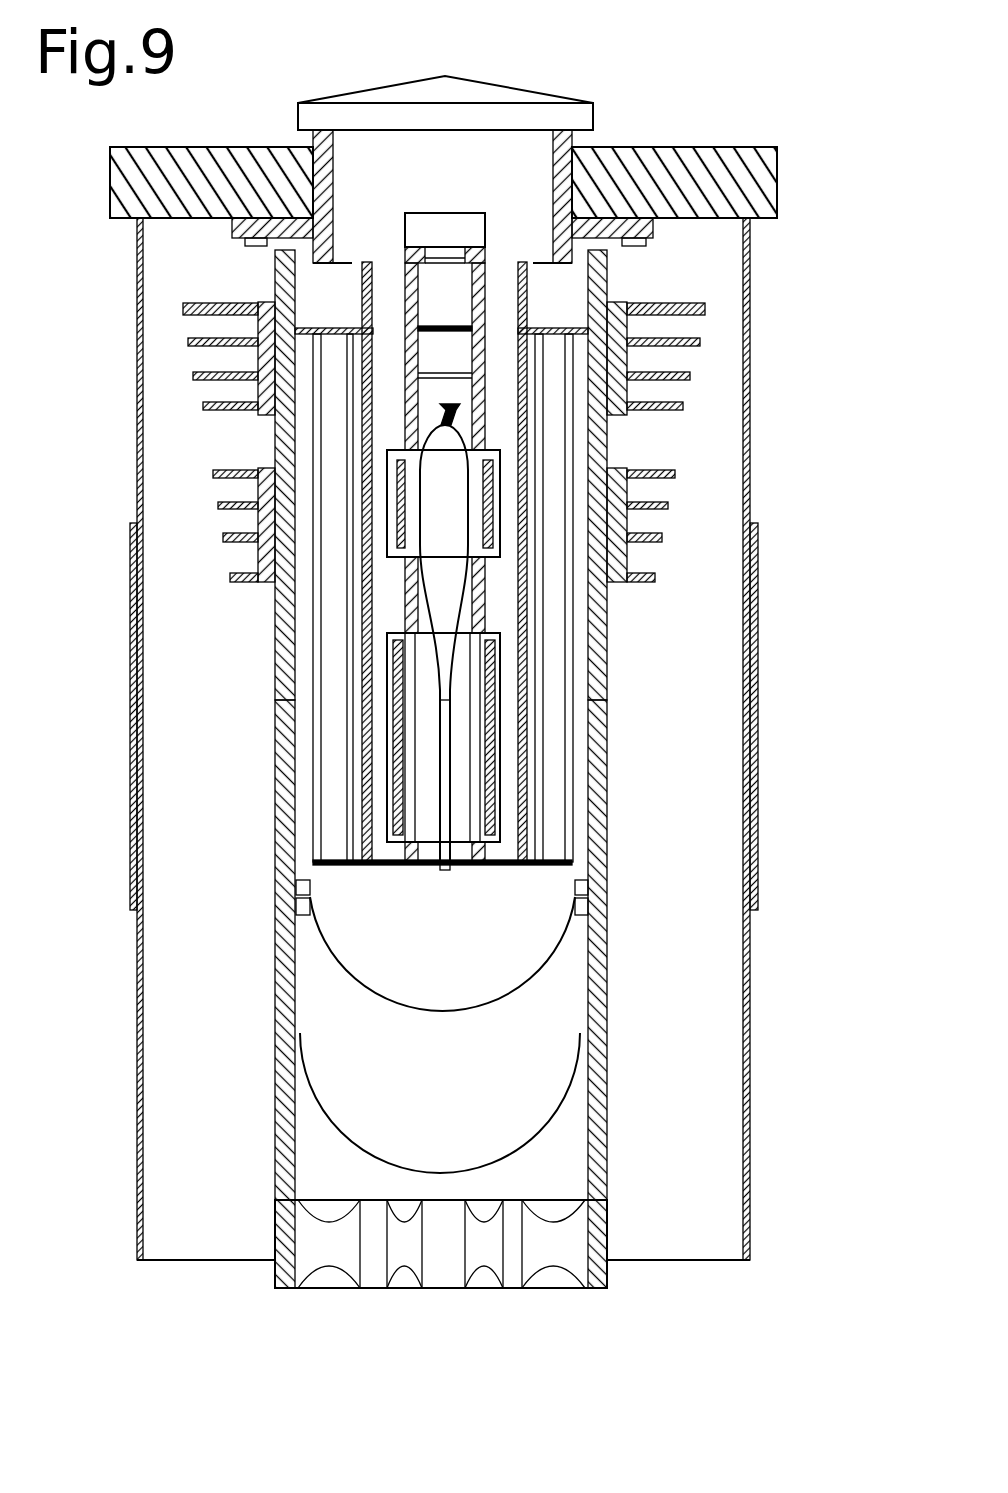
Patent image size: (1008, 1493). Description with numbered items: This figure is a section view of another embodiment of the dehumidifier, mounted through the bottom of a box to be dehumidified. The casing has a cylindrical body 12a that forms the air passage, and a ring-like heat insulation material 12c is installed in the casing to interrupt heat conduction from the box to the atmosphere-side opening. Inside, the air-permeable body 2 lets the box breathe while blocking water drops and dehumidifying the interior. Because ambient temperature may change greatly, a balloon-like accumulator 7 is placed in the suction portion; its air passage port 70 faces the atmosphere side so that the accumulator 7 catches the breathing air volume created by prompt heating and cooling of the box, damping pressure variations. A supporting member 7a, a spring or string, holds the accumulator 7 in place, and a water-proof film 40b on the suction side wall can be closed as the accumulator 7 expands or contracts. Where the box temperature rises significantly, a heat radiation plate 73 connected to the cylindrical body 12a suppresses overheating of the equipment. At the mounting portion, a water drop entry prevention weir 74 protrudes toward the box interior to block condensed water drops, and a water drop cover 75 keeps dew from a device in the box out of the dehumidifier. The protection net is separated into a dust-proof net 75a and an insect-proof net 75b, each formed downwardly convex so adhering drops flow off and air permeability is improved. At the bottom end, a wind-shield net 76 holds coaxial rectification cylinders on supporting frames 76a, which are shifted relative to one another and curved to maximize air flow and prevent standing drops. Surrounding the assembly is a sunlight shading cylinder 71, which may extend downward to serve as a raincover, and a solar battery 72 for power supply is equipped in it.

The air-permeable body 2 is at (573, 706).
The balloon-like accumulator 7 is at (462, 450).
The supporting member 7a is at (462, 407).
The cylindrical body 12a is at (607, 810).
The ring-like heat insulation material 12c is at (610, 622).
The water-proof film 40b is at (490, 490).
The air passage port 70 is at (450, 865).
The sunlight shading cylinder 71 is at (750, 940).
The solar battery 72 is at (758, 707).
The heat radiation plate 73 is at (657, 478).
The water drop entry prevention weir 74 is at (565, 100).
The water drop cover 75 is at (505, 88).
The dust-proof net 75a is at (470, 1012).
The insect-proof net 75b is at (552, 1120).
The wind-shield net 76 is at (612, 1288).
The supporting frames 76a is at (540, 1262).